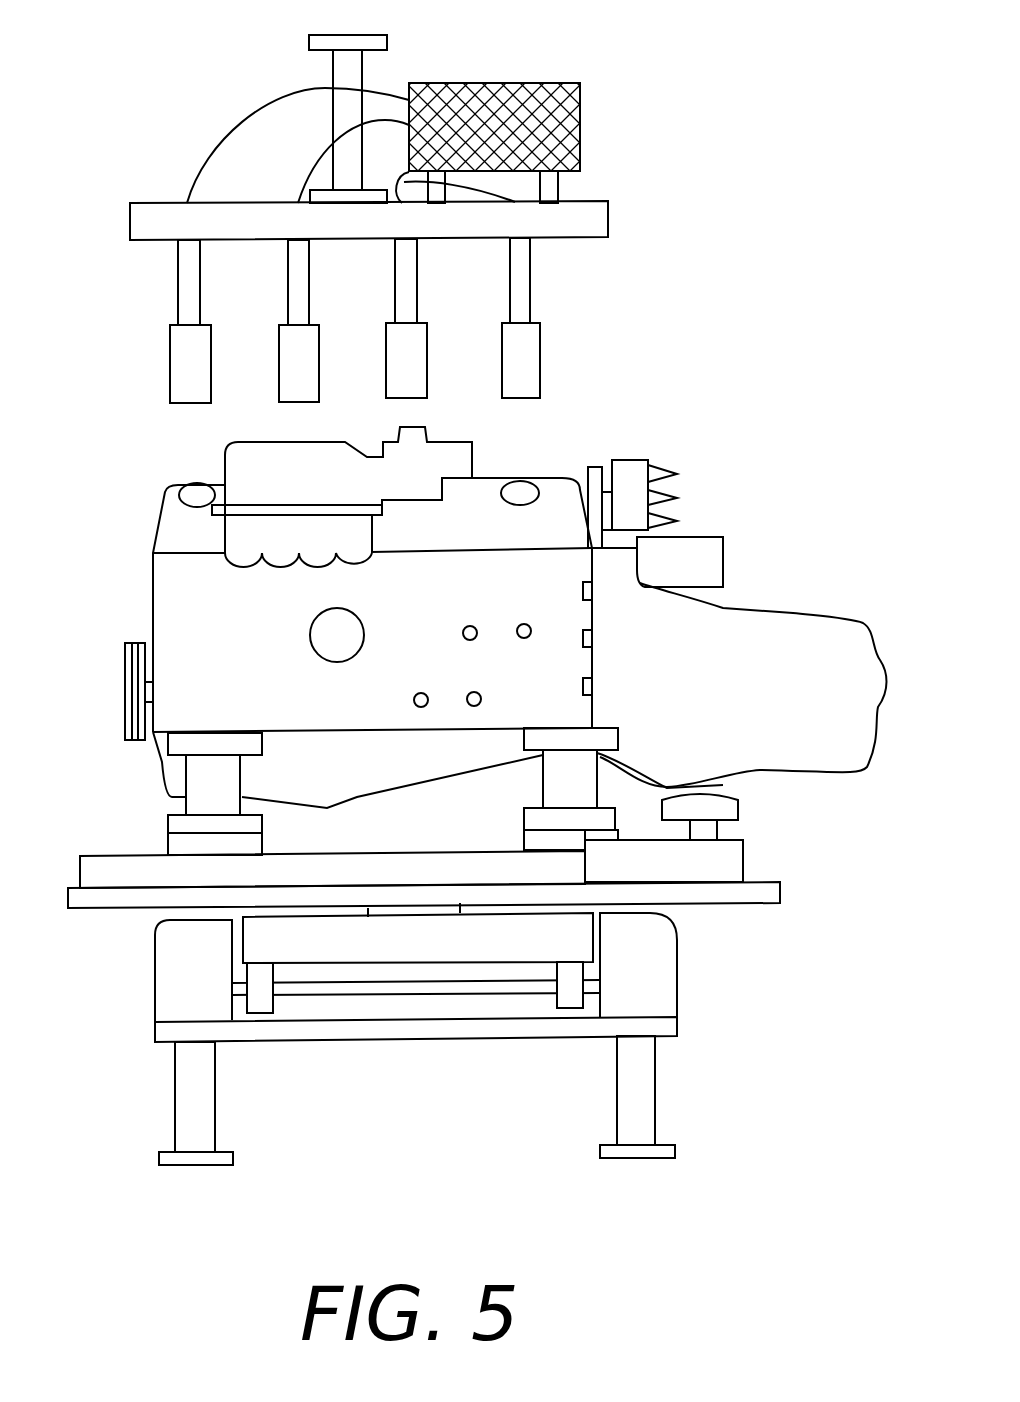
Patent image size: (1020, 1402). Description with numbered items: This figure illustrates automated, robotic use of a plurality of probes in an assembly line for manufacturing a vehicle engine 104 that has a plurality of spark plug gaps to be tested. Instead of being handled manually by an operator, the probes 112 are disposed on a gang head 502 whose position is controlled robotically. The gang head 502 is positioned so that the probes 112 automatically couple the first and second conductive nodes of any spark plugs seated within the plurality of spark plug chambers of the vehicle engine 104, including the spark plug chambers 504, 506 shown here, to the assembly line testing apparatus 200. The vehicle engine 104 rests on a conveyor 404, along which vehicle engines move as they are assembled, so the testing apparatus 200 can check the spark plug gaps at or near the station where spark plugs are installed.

The vehicle engine 104 is at (145, 616).
The probe 112 is at (166, 357).
The assembly line testing apparatus 200 is at (558, 80).
The conveyor 404 is at (683, 972).
The gang head 502 is at (619, 204).
The spark plug chamber 504 is at (184, 489).
The spark plug chamber 506 is at (526, 489).